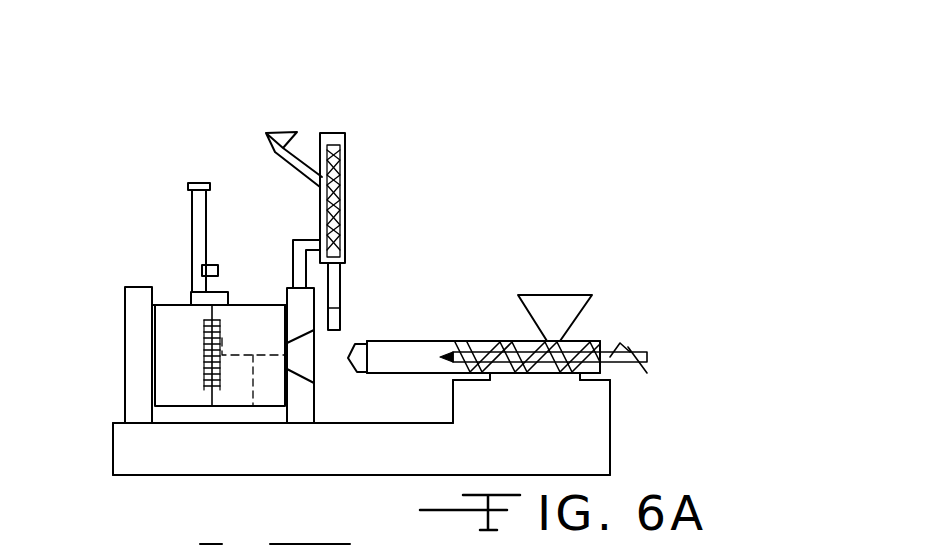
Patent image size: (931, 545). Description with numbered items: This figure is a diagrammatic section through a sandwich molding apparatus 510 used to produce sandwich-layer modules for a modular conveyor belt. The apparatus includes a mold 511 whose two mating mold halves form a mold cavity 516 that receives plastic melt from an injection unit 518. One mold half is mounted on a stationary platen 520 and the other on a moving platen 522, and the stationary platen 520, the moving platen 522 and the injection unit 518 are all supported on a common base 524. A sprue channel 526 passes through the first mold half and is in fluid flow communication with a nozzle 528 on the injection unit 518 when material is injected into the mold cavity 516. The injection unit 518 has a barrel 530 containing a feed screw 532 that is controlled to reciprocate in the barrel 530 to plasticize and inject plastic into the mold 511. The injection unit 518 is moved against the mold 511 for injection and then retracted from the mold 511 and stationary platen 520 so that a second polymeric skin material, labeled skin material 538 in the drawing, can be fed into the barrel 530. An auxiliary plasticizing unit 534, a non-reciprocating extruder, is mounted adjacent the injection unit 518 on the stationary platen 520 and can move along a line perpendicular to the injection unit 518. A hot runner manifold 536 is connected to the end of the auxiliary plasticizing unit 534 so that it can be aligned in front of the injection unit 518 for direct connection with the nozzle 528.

The sandwich molding apparatus 510 is at (571, 77).
The mold 511 is at (170, 298).
The mold cavity 516 is at (222, 338).
The injection unit 518 is at (577, 279).
The stationary platen 520 is at (318, 410).
The moving platen 522 is at (125, 406).
The common base 524 is at (605, 447).
The sprue channel 526 is at (254, 406).
The nozzle 528 is at (352, 347).
The barrel 530 is at (405, 347).
The feed screw 532 is at (630, 347).
The auxiliary plasticizing unit 534 is at (348, 140).
The hot runner manifold 536 is at (340, 285).
The skin material 538 is at (335, 510).